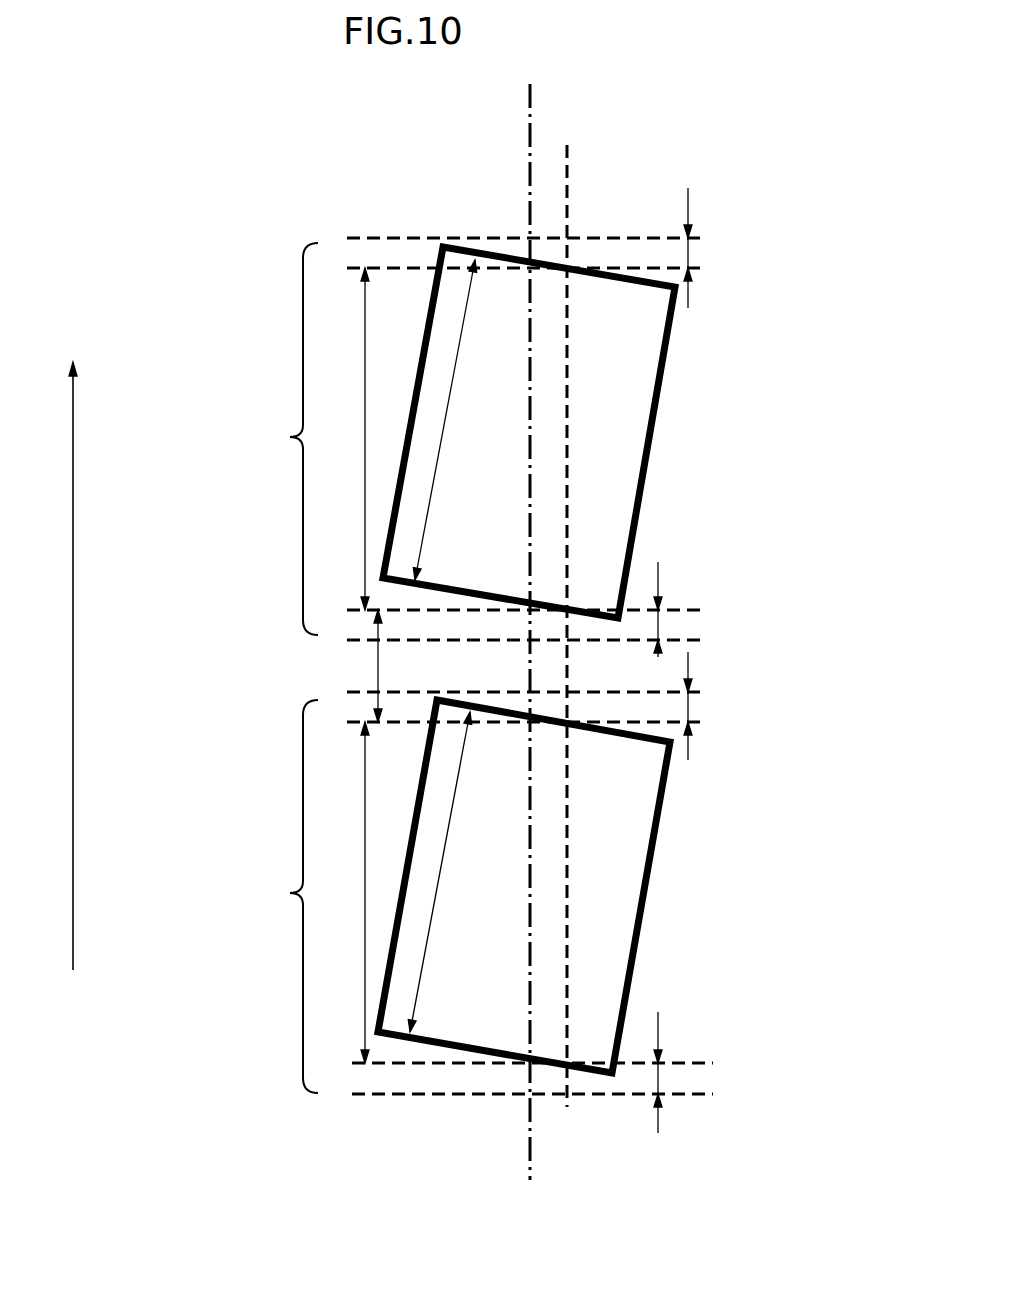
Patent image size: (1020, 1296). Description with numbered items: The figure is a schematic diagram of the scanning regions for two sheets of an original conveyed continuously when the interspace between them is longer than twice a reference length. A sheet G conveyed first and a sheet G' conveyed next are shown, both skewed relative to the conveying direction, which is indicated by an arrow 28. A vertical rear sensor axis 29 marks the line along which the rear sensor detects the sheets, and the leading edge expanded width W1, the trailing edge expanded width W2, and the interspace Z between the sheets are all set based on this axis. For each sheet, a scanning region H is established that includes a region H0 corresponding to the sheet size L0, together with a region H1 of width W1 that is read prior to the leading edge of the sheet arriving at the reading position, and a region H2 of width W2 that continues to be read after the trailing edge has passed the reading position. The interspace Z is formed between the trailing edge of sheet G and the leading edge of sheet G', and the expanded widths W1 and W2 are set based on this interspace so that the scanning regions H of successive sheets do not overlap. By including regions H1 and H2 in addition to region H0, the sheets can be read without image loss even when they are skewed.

The arrow 28 is at (73, 582).
The rear sensor axis 29 is at (567, 172).
The sheet G is at (560, 432).
The sheet G' is at (554, 886).
The size L0 is at (443, 646).
The region H0 is at (349, 665).
The scanning region H is at (290, 668).
The interspace Z is at (367, 666).
The leading edge expanded width W1 is at (709, 474).
The trailing edge expanded width W2 is at (678, 847).
The region H1 is at (700, 250).
The region H2 is at (673, 623).